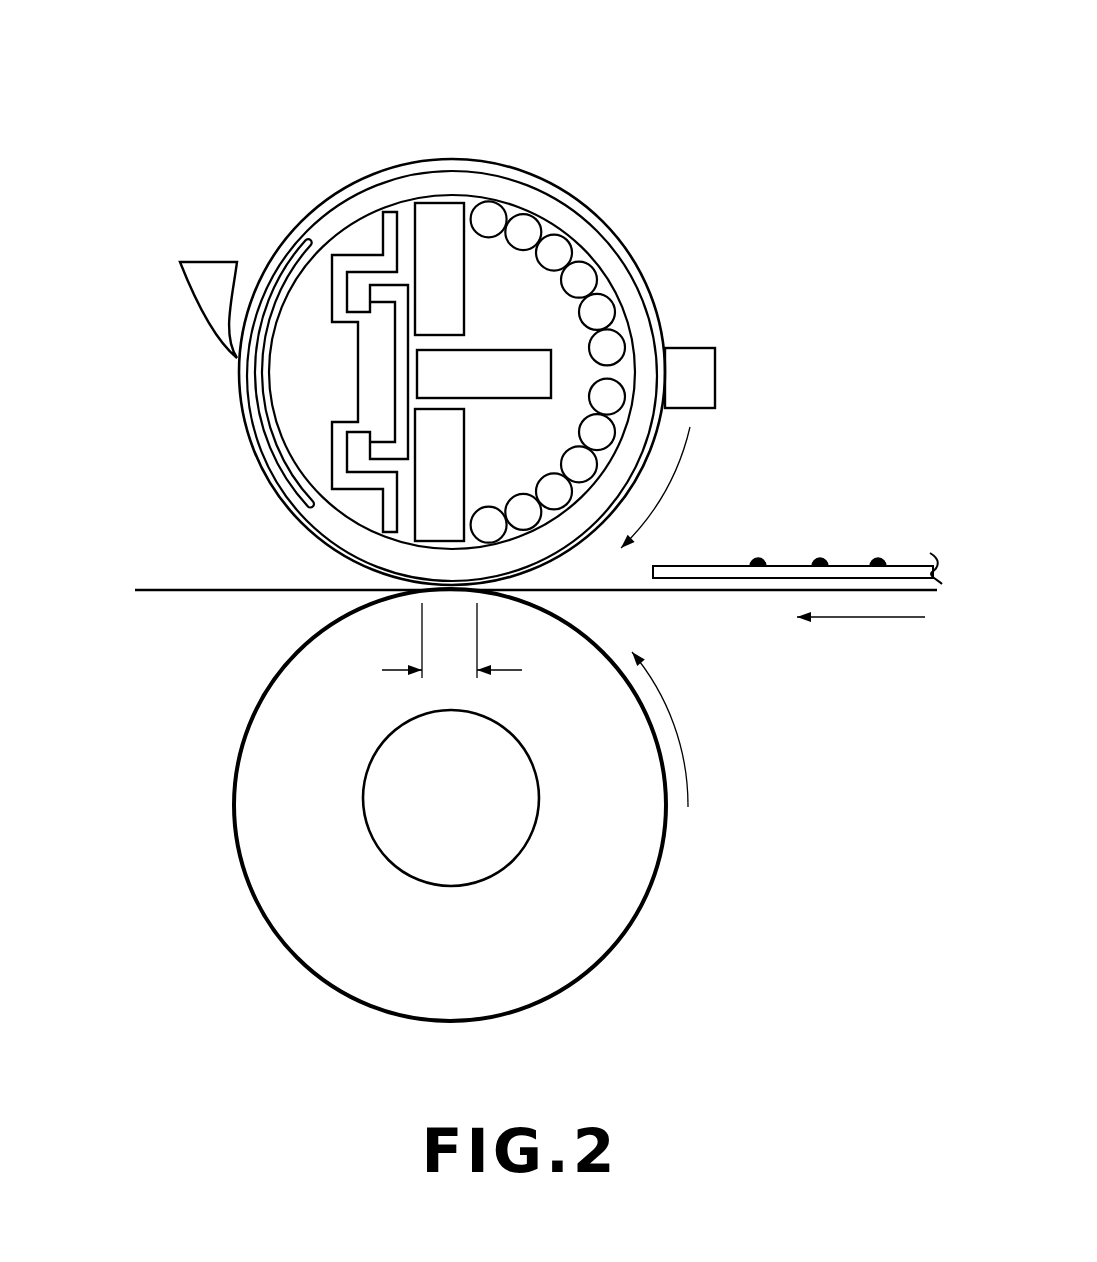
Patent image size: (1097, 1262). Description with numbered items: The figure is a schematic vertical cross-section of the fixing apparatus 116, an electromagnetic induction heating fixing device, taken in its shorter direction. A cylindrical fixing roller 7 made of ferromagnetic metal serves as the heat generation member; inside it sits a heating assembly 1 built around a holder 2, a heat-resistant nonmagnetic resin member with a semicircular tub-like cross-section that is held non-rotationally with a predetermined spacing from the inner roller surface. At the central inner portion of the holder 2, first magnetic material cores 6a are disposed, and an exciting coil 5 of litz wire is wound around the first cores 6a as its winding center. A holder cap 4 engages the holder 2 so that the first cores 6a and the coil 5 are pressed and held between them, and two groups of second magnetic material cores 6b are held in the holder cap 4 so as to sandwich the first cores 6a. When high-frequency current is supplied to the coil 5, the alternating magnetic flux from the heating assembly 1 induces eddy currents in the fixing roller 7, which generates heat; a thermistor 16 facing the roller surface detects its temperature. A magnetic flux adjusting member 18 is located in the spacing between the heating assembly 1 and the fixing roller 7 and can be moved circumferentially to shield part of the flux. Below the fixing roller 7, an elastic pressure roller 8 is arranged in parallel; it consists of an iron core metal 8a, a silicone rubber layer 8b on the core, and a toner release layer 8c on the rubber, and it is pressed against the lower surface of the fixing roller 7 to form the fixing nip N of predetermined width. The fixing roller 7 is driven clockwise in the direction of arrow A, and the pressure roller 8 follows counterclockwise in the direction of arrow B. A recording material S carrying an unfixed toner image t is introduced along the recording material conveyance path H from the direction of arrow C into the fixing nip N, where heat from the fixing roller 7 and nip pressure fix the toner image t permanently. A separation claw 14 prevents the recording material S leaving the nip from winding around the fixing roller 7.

The fixing apparatus 116 is at (672, 66).
The heating assembly 1 is at (633, 318).
The holder 2 is at (508, 262).
The holder cap 4 is at (358, 252).
The exciting coil 5 is at (558, 255).
The first magnetic material cores 6a is at (513, 368).
The second magnetic material cores 6b is at (452, 310).
The fixing roller 7 is at (577, 192).
The pressure roller 8 is at (668, 852).
The core metal 8a is at (417, 855).
The silicone rubber layer 8b is at (295, 877).
The toner release layer 8c is at (230, 778).
The separation claw 14 is at (197, 292).
The first temperature detection means 16 is at (715, 372).
The magnetic flux adjusting member 18 is at (252, 402).
The arrow A is at (657, 487).
The arrow B is at (673, 729).
The arrow C is at (861, 637).
The recording material conveyance path H is at (150, 593).
The fixing nip N is at (452, 646).
The recording material S is at (908, 567).
The unfixed toner image t is at (766, 560).